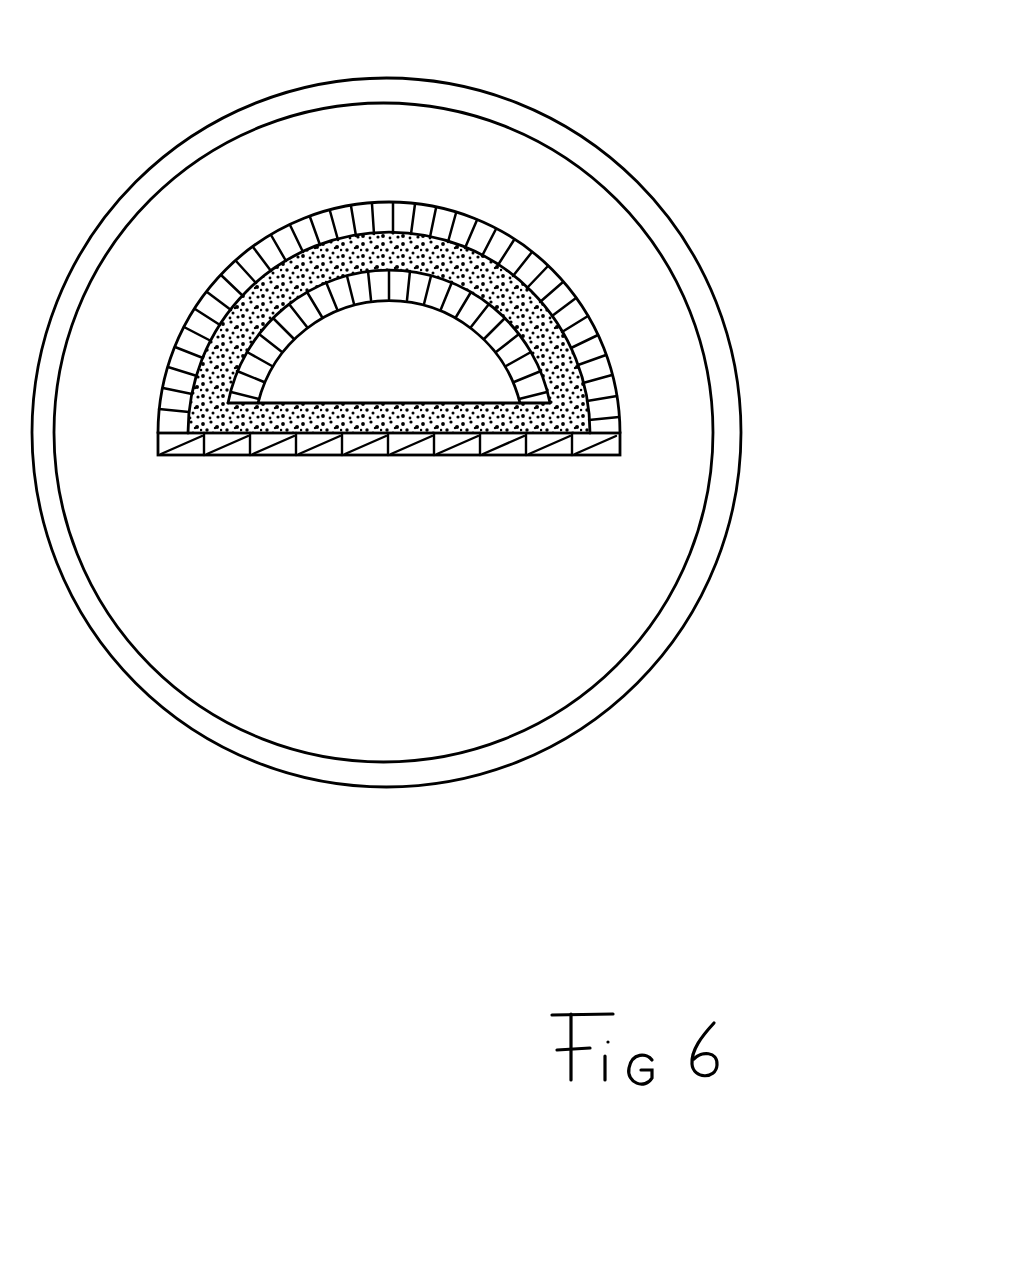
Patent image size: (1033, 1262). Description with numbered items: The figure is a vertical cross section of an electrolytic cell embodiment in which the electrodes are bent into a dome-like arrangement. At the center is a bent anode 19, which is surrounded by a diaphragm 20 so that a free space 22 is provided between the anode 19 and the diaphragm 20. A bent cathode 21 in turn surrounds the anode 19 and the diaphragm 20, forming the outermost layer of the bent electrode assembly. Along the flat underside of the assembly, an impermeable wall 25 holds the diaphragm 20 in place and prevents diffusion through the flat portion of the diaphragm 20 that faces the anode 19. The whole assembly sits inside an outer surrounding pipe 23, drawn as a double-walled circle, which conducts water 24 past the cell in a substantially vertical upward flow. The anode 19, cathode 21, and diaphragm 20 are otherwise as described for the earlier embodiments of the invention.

The anode 19 is at (518, 345).
The diaphragm 20 is at (458, 263).
The cathode 21 is at (606, 405).
The free space 22 is at (362, 377).
The outer surrounding pipe 23 is at (665, 640).
The water 24 is at (465, 700).
The impermeable wall 25 is at (490, 456).